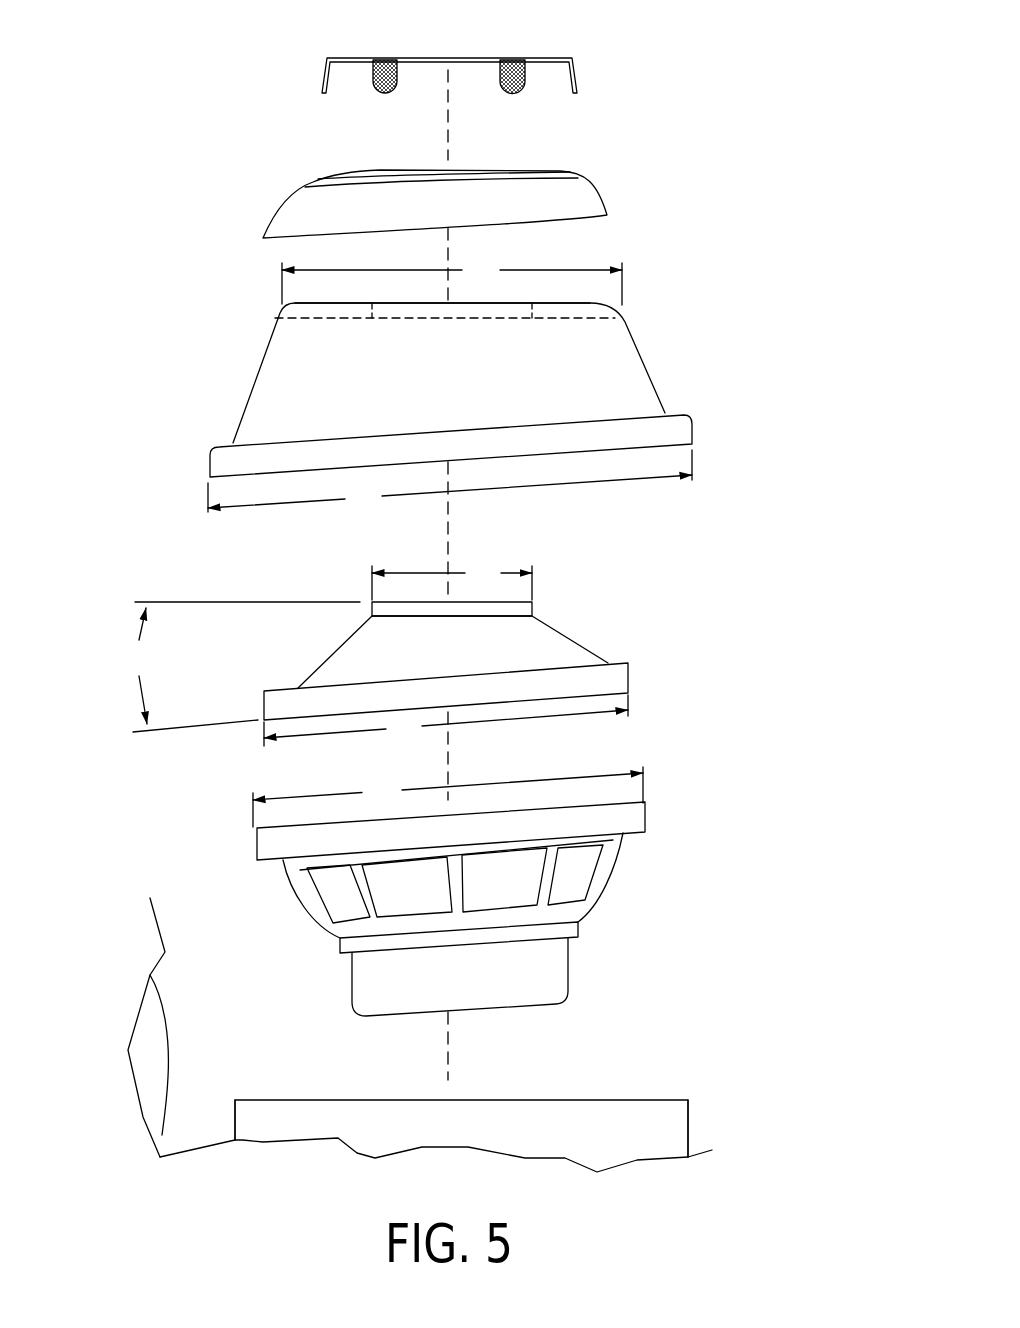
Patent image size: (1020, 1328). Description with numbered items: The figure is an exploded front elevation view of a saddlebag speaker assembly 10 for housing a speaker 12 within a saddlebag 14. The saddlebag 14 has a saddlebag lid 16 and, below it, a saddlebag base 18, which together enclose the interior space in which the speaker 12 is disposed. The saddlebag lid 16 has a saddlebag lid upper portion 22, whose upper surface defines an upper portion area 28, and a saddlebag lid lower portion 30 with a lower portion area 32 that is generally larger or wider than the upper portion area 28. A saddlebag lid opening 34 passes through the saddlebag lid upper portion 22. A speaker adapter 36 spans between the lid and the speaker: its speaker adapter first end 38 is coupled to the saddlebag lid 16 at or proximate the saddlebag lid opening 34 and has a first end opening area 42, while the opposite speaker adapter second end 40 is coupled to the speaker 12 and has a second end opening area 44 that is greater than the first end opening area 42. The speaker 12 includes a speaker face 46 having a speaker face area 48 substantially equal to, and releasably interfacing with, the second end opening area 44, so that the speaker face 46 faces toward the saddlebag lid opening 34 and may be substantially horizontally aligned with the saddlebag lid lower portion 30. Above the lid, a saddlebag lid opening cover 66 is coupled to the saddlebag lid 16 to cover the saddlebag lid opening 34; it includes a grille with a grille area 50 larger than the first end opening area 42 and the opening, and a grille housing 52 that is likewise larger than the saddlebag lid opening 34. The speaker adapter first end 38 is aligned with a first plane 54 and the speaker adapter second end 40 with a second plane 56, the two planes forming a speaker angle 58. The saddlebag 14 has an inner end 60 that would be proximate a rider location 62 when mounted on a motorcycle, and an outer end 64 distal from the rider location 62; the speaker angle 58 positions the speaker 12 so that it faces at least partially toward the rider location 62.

The saddlebag speaker assembly 10 is at (800, 36).
The speaker 12 is at (593, 916).
The saddlebag 14 is at (631, 1034).
The saddlebag lid 16 is at (603, 368).
The saddlebag base 18 is at (675, 1122).
The saddlebag lid upper portion 22 is at (600, 292).
The upper portion area 28 is at (452, 281).
The saddlebag lid lower portion 30 is at (699, 420).
The lower portion area 32 is at (450, 482).
The saddlebag lid opening 34 is at (371, 318).
The speaker adapter 36 is at (542, 641).
The speaker adapter first end 38 is at (358, 595).
The speaker adapter second end 40 is at (612, 699).
The first end opening area 42 is at (452, 580).
The second end opening area 44 is at (446, 723).
The speaker face 46 is at (604, 804).
The speaker face area 48 is at (533, 58).
The grille area 50 is at (367, 170).
The grille housing 52 is at (580, 187).
The first plane 54 is at (165, 602).
The second plane 56 is at (173, 731).
The speaker angle 58 is at (139, 666).
The inner end 60 is at (222, 1093).
The rider location 62 is at (152, 1043).
The outer end 64 is at (698, 1136).
The saddlebag lid opening cover 66 is at (641, 116).